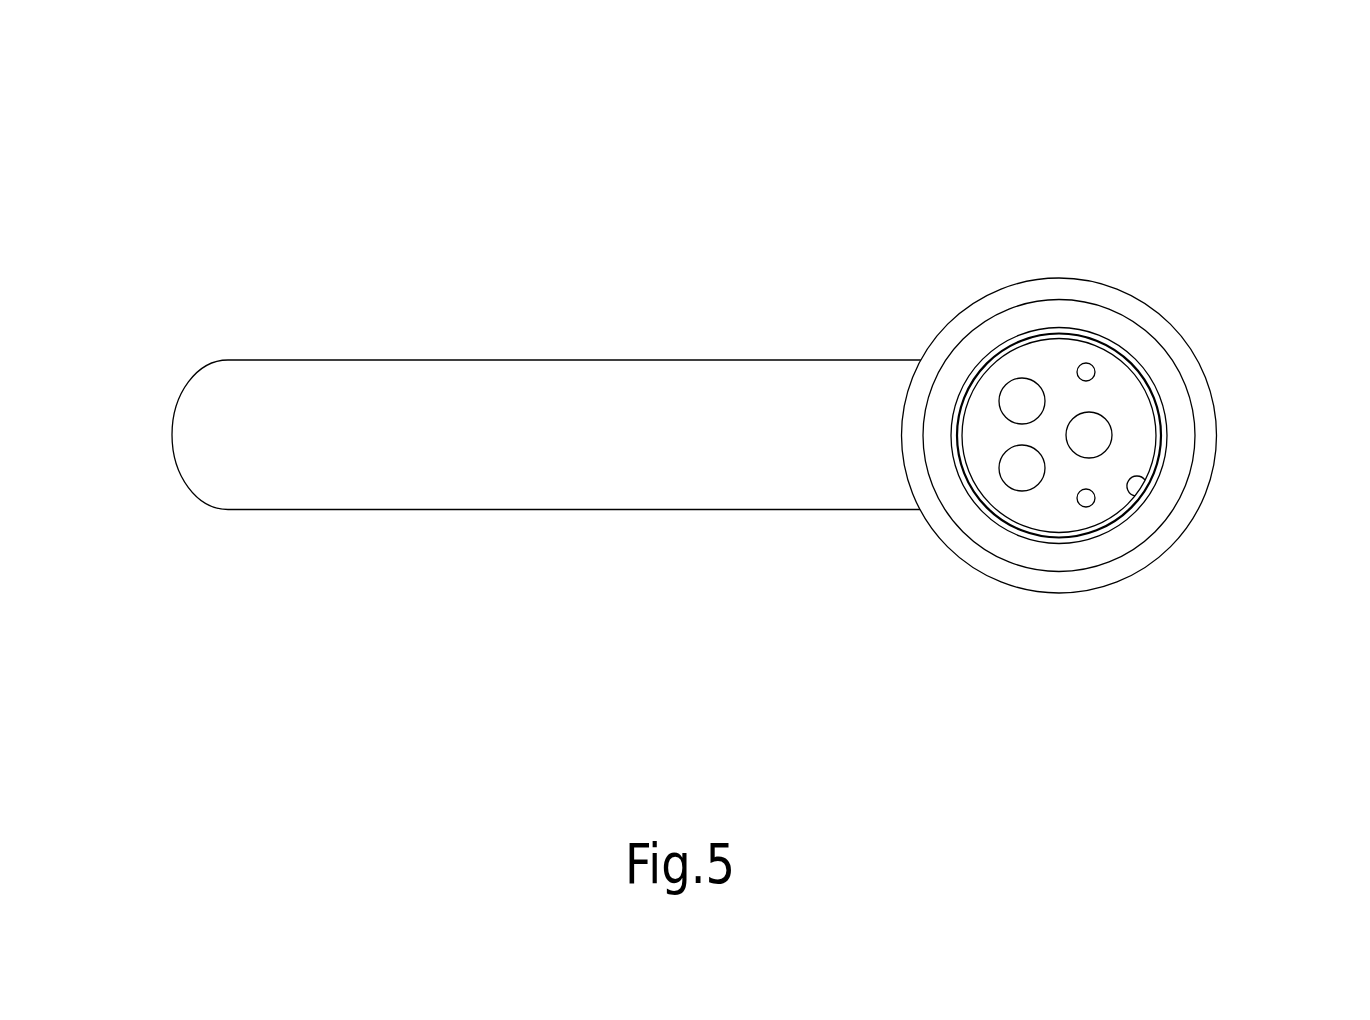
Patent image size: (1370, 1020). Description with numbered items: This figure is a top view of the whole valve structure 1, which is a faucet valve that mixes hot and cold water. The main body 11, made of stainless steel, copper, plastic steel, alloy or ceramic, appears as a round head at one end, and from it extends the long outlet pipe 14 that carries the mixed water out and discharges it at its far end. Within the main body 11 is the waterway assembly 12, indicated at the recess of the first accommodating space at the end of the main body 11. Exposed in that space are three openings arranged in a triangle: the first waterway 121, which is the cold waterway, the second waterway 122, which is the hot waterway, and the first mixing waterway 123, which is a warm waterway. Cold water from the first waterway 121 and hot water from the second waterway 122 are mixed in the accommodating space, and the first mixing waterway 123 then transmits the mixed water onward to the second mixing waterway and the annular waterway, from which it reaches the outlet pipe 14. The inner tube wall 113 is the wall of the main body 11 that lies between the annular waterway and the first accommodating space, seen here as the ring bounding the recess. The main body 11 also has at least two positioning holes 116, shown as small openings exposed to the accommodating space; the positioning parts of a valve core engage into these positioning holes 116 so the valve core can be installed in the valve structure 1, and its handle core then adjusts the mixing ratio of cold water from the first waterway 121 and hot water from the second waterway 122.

The valve structure 1 is at (1205, 157).
The main body 11 is at (1065, 278).
The waterway assembly 12 is at (996, 428).
The outlet pipe 14 is at (499, 400).
The inner tube wall 113 is at (1140, 502).
The positioning holes 116 is at (1092, 372).
The first waterway 121 is at (1017, 393).
The second waterway 122 is at (1024, 480).
The first mixing waterway 123 is at (1097, 433).